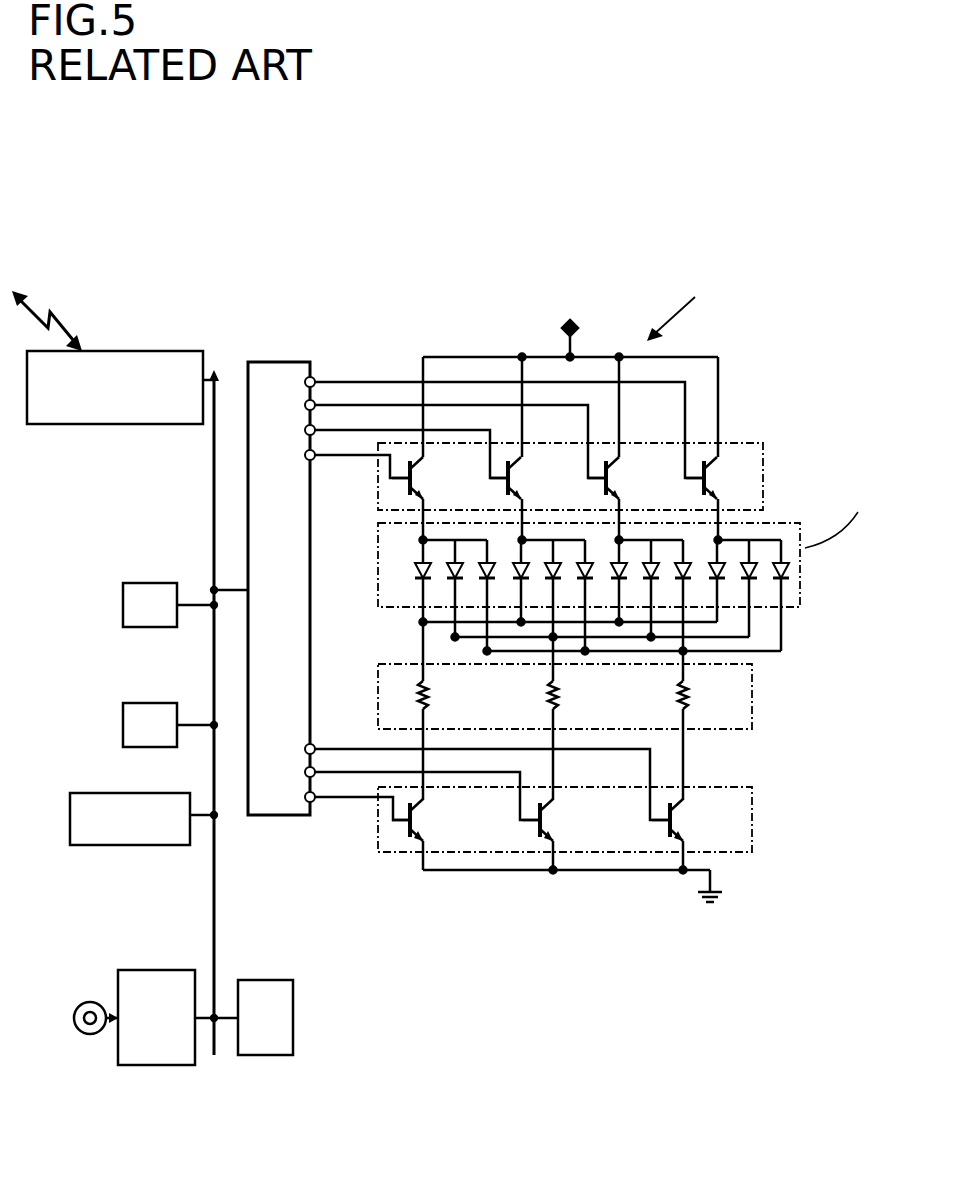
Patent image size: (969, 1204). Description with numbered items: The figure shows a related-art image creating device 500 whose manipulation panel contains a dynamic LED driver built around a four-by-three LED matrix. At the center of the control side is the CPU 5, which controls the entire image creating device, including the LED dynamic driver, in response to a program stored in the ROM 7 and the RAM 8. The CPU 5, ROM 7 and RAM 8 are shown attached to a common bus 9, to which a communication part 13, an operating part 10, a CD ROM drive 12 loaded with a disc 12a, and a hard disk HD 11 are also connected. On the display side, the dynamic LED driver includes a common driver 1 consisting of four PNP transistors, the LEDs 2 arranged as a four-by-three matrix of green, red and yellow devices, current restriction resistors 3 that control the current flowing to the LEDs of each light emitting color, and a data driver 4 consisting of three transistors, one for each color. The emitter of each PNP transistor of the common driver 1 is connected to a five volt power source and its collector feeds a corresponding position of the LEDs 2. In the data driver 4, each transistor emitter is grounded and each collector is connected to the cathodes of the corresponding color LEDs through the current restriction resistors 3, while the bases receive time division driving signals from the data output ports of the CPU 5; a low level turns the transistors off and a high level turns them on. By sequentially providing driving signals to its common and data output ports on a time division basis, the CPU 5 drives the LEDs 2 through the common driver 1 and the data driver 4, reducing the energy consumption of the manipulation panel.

The display device (related art) 500 is at (413, 217).
The communication part 13 is at (132, 351).
The bus 9 is at (214, 453).
The CPU 5 is at (278, 362).
The ROM 7 is at (152, 583).
The RAM 8 is at (152, 703).
The operating part 10 is at (160, 793).
The CD ROM drive 12 is at (157, 970).
The CD-ROM disc 12a is at (90, 1001).
The hard disk (HD) 11 is at (262, 980).
The common driver 1 is at (748, 443).
The LEDs 2 is at (778, 523).
The current restriction resistors 3 is at (752, 698).
The data driver 4 is at (752, 830).